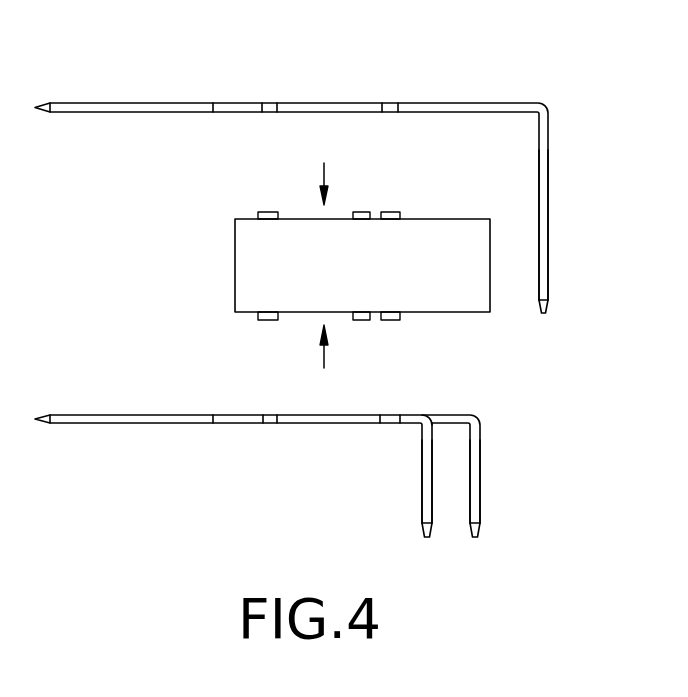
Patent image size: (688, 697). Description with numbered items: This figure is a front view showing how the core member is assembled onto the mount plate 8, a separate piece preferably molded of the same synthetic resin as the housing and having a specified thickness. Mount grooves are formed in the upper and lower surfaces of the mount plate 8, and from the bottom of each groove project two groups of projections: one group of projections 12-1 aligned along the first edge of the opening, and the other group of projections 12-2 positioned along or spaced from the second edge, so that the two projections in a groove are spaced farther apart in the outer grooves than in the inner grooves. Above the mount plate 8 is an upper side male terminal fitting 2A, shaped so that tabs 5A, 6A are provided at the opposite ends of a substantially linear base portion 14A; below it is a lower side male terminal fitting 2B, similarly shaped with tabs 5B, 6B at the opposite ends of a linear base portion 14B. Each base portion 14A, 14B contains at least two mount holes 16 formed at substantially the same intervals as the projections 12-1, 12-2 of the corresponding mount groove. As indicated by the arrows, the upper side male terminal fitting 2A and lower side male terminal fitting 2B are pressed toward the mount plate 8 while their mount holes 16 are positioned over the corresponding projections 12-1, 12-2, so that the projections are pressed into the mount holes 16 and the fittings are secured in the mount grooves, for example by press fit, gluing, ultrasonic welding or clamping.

The upper side male terminal fitting 2A is at (333, 96).
The lower side male terminal fitting 2B is at (151, 429).
The tab 5A is at (548, 177).
The tab 5B is at (480, 483).
The tab 6A is at (125, 103).
The tab 6B is at (98, 415).
The mount plate 8 is at (258, 272).
The projections 12-1 is at (266, 212).
The projections 12-2 is at (360, 212).
The base portion 14A is at (497, 103).
The base portion 14B is at (318, 423).
The mount holes 16 is at (268, 101).